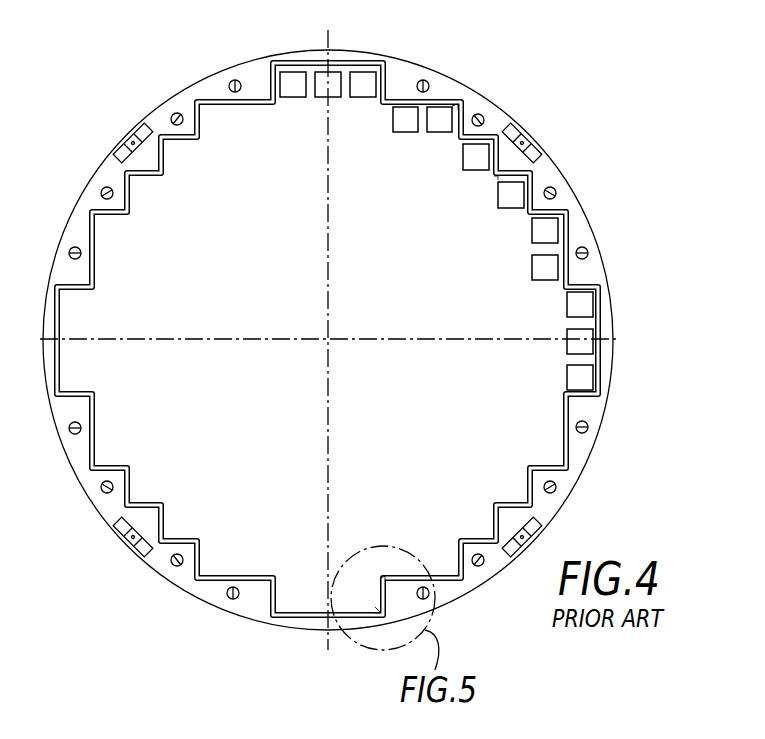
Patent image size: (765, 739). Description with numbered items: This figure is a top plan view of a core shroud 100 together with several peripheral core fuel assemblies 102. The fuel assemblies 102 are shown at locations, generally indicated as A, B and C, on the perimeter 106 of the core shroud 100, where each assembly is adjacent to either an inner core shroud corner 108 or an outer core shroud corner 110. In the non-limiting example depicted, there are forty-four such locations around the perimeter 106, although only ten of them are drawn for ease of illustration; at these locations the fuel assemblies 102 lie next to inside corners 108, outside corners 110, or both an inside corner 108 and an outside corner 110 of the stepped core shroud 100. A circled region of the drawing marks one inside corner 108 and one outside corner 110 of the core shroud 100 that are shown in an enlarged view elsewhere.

The core shroud 100 is at (111, 591).
The fuel assemblies 102 is at (331, 98).
The perimeter 106 is at (586, 480).
The inner core shroud corner 108 is at (442, 116).
The outer core shroud corner 110 is at (484, 185).